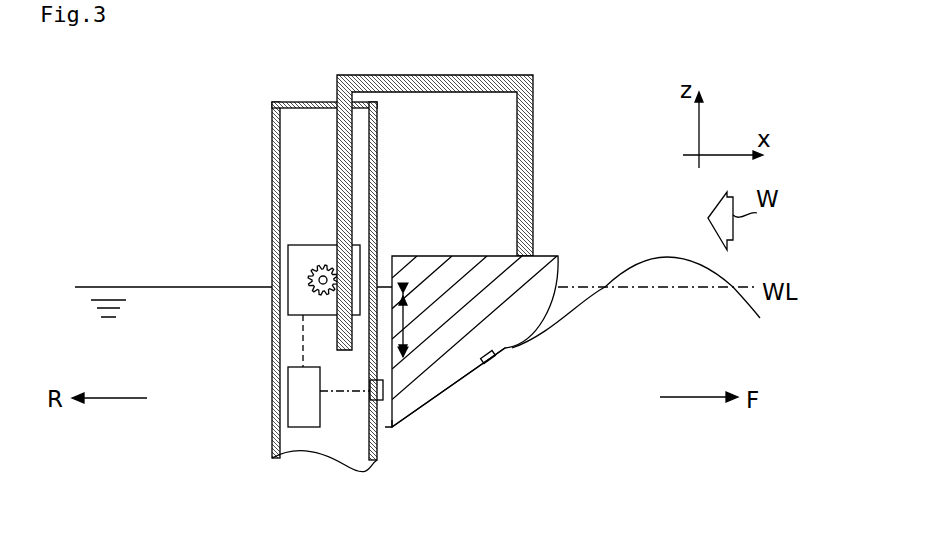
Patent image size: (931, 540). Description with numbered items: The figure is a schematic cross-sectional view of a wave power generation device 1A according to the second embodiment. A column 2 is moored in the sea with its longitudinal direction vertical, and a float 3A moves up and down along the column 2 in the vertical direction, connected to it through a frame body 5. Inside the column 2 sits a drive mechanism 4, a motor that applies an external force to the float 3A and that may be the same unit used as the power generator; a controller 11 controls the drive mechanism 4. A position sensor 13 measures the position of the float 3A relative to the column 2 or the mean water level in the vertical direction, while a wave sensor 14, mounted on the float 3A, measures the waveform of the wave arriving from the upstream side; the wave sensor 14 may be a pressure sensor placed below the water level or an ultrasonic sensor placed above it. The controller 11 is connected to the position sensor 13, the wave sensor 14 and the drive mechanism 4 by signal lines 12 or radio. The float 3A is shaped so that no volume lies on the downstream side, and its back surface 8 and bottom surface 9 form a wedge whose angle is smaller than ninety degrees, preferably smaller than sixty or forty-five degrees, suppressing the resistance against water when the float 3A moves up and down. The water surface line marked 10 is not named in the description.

The wave power generation device 1A is at (115, 138).
The column 2 is at (272, 148).
The float 3A is at (467, 258).
The drive mechanism 4 is at (306, 246).
The frame body 5 is at (533, 115).
The back surface 8 is at (391, 432).
The bottom surface 9 is at (446, 393).
The water surface 10 is at (175, 287).
The controller 11 is at (300, 406).
The signal lines 12 is at (303, 340).
The position sensor 13 is at (373, 382).
The wave sensor 14 is at (490, 363).